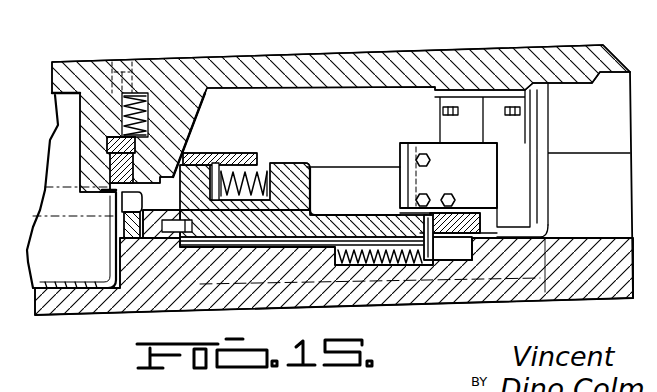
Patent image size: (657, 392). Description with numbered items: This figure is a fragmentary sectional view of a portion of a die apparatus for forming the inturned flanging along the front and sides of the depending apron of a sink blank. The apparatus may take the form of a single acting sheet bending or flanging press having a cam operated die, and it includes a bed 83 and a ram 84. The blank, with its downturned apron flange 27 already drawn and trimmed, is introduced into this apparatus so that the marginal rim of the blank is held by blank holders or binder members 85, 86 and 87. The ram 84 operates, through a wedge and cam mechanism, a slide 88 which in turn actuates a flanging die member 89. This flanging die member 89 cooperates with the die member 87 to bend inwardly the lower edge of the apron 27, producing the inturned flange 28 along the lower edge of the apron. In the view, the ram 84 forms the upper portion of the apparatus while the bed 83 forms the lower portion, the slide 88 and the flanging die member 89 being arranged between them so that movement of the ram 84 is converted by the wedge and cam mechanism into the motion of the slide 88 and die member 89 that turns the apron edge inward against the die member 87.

The ram 84 is at (314, 62).
The blank holder 85 is at (153, 153).
The blank holder 86 is at (203, 167).
The slide 88 is at (292, 173).
The flanging die member 89 is at (172, 230).
The bed 83 is at (507, 280).
The die member 87 is at (110, 250).
The apron flange 27 is at (128, 205).
The inturned flange 28 is at (142, 193).